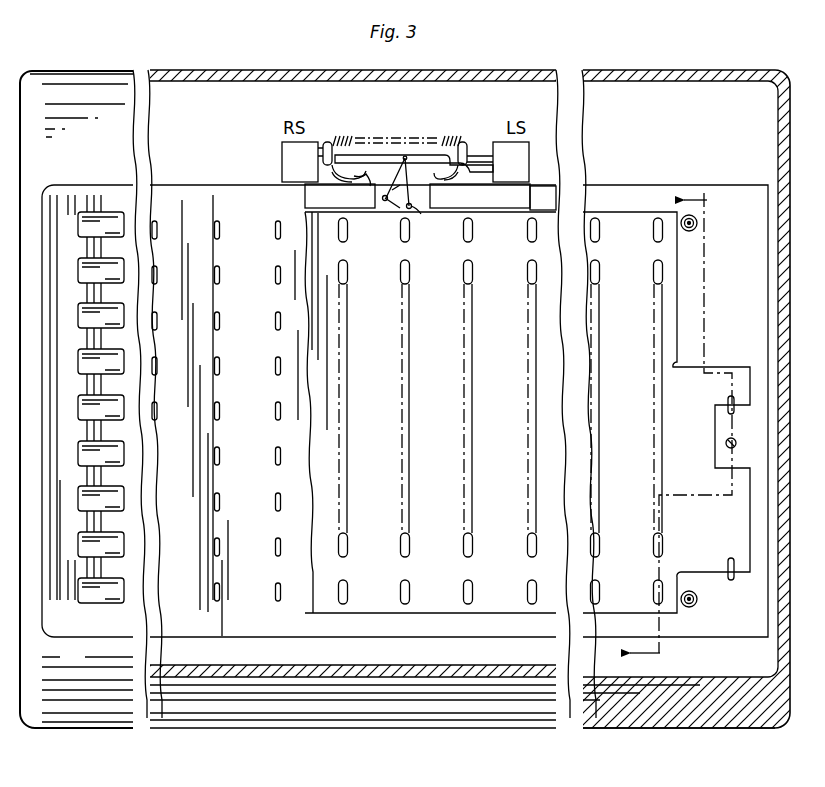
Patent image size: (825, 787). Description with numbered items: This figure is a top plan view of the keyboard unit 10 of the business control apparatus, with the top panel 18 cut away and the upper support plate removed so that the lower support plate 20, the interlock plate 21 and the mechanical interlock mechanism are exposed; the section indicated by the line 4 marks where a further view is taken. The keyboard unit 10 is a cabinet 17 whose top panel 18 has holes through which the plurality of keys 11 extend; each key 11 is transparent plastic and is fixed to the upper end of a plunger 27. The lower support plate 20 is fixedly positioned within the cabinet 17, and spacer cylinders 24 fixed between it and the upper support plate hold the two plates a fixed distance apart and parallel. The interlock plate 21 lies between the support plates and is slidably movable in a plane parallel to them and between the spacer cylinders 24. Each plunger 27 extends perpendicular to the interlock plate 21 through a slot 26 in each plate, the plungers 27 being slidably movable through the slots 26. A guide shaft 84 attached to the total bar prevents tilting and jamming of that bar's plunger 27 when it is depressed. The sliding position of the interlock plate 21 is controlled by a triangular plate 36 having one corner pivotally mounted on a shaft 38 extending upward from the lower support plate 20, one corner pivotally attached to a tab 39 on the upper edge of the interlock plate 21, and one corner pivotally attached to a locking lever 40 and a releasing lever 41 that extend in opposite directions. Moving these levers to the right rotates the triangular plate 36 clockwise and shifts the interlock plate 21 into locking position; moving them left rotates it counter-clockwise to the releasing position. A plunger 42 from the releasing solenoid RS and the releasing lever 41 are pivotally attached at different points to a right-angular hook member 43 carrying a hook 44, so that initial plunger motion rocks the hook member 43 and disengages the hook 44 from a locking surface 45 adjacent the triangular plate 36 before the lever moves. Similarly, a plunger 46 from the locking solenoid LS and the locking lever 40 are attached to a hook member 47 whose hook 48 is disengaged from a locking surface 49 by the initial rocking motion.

The keyboard unit 10 is at (88, 70).
The keys 11 is at (84, 230).
The cabinet 17 is at (232, 72).
The top panel 18 is at (92, 628).
The lower support plate 20 is at (608, 192).
The interlock plate 21 is at (618, 218).
The spacer cylinders 24 is at (700, 226).
The slots 26 is at (220, 601).
The plungers 27 is at (526, 227).
The triangular plate 36 is at (444, 186).
The shaft 38 is at (384, 213).
The tab 39 is at (427, 217).
The locking lever 40 is at (428, 159).
The releasing lever 41 is at (380, 155).
The plunger 42 is at (307, 162).
The hook member 43 is at (353, 183).
The hook 44 is at (361, 191).
The locking surface 45 is at (305, 195).
The plunger 46 is at (493, 162).
The hook member 47 is at (508, 190).
The hook 48 is at (398, 181).
The locking surface 49 is at (543, 198).
The guide shaft 84 is at (710, 442).
The section line 4- 4 is at (664, 427).